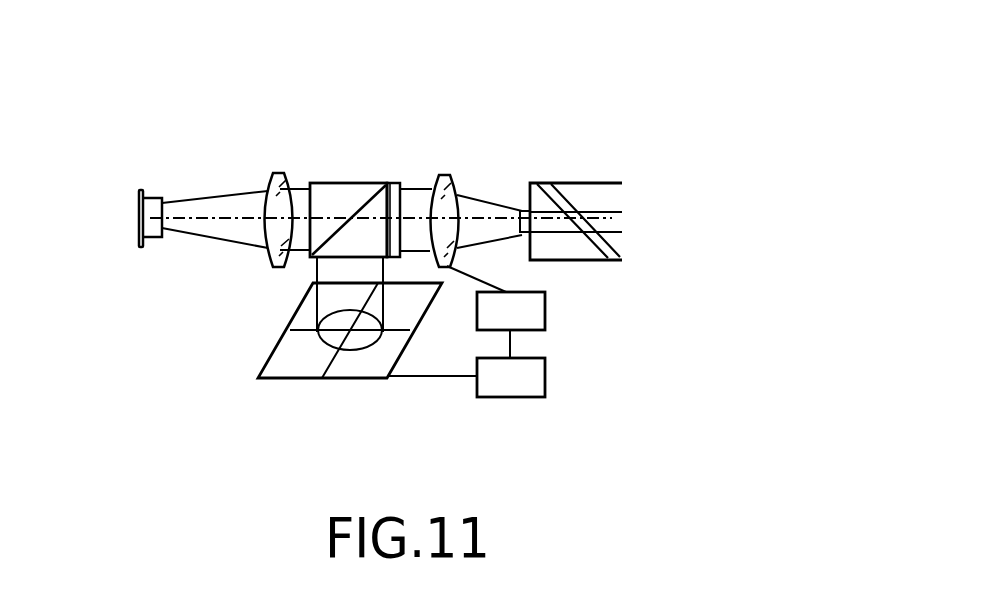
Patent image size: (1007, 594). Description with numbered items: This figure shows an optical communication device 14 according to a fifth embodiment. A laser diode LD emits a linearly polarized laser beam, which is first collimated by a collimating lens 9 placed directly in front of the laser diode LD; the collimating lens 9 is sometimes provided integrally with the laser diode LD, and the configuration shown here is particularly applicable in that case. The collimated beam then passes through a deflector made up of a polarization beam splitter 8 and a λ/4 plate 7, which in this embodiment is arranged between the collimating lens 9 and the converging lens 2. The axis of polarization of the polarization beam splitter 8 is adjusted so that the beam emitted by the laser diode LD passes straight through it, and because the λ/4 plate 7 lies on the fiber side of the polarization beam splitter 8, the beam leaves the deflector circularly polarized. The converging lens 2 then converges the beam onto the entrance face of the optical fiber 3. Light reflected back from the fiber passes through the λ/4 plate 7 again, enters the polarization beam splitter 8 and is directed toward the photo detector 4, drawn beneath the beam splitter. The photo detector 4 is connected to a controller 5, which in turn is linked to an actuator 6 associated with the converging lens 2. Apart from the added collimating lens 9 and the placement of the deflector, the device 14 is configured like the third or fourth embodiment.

The optical communication device 14 is at (388, 115).
The laser diode LD is at (140, 218).
The collimating lens 9 is at (270, 200).
The polarization beam splitter 8 is at (343, 182).
The λ/4 plate 7 is at (398, 182).
The converging lens 2 is at (452, 198).
The optical fiber 3 is at (578, 192).
The photo detector 4 is at (283, 357).
The actuator 6 is at (545, 312).
The controller 5 is at (545, 377).